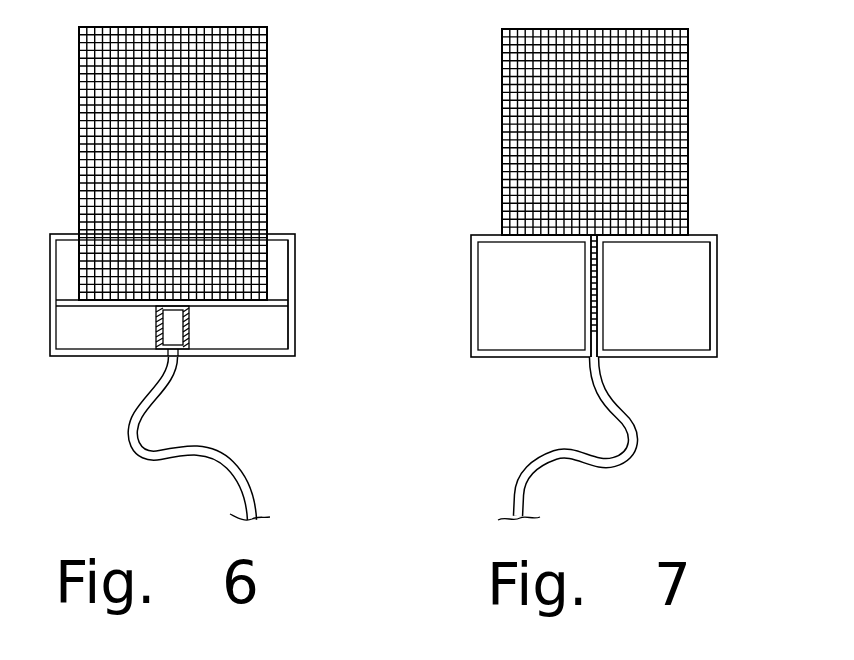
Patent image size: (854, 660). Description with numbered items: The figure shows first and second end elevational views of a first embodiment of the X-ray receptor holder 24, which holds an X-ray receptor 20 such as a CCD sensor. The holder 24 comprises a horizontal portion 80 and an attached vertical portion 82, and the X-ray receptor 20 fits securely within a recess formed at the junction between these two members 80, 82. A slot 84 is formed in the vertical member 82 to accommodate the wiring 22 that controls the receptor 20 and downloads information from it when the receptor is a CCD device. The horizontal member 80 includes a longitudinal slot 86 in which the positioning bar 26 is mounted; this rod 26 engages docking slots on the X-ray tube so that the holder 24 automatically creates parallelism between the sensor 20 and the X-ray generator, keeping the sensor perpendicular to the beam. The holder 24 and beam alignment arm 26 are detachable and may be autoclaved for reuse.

In FIG. 6, the X-ray receptor 20 is at (267, 87).
In FIG. 7, the X-ray receptor 20 is at (688, 88).
In FIG. 6, the wiring 22 is at (247, 472).
In FIG. 7, the wiring 22 is at (520, 475).
In FIG. 6, the receptor holder 24 is at (314, 250).
In FIG. 7, the receptor holder 24 is at (736, 252).
In FIG. 6, the rod 26 is at (173, 328).
In FIG. 6, the horizontal portion 80 is at (252, 356).
In FIG. 6, the vertical portion 82 is at (294, 300).
In FIG. 7, the vertical portion 82 is at (717, 300).
In FIG. 7, the slot 84 is at (603, 302).
In FIG. 6, the longitudinal slot 86 is at (188, 330).